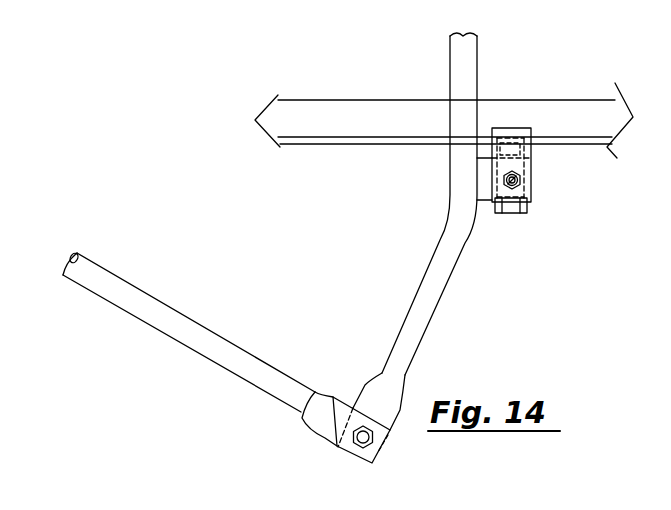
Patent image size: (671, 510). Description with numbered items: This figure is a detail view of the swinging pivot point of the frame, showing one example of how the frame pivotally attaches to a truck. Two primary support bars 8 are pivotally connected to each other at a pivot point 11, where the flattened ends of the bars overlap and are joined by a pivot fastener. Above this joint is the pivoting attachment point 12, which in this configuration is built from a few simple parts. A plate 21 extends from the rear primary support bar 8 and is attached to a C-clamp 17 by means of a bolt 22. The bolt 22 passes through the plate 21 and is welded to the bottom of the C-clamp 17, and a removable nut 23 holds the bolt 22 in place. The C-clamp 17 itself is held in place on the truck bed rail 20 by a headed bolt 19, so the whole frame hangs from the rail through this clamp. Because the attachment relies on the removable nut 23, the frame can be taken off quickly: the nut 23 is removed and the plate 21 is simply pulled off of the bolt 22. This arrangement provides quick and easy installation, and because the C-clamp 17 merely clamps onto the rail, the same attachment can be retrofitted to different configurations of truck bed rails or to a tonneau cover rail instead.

The primary support bar 8 is at (221, 354).
The pivot point 11 is at (357, 444).
The pivoting attachment point 12 is at (532, 222).
The C-clamp 17 is at (512, 130).
The headed bolt 19 is at (516, 152).
The truck bed rail 20 is at (373, 137).
The plate 21 is at (483, 177).
The bolt 22 is at (520, 186).
The removable nut 23 is at (506, 184).